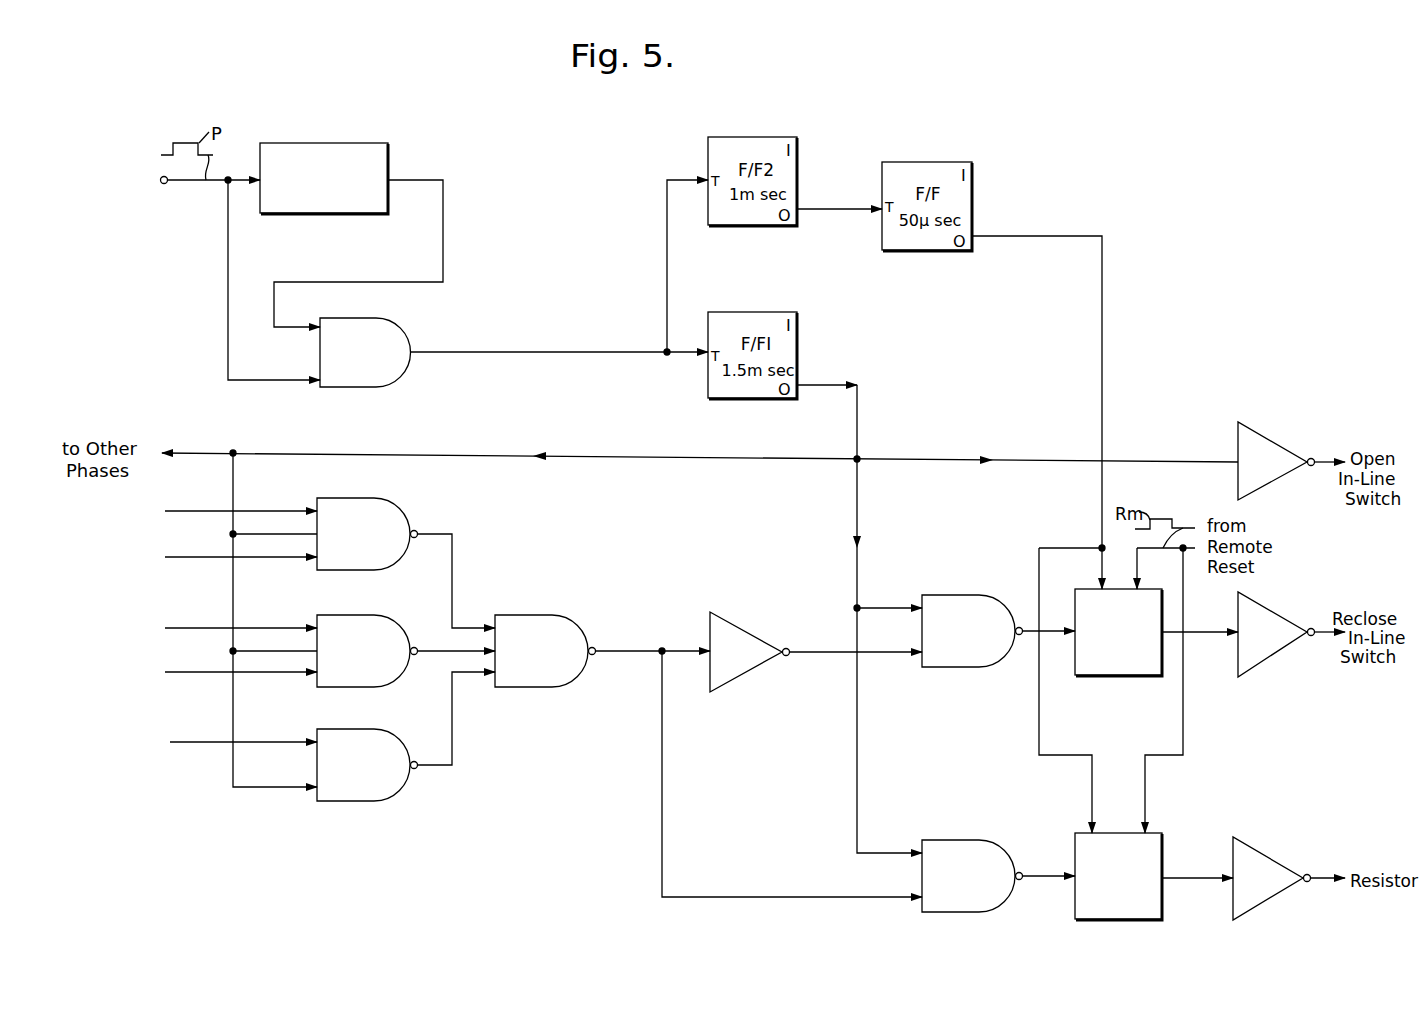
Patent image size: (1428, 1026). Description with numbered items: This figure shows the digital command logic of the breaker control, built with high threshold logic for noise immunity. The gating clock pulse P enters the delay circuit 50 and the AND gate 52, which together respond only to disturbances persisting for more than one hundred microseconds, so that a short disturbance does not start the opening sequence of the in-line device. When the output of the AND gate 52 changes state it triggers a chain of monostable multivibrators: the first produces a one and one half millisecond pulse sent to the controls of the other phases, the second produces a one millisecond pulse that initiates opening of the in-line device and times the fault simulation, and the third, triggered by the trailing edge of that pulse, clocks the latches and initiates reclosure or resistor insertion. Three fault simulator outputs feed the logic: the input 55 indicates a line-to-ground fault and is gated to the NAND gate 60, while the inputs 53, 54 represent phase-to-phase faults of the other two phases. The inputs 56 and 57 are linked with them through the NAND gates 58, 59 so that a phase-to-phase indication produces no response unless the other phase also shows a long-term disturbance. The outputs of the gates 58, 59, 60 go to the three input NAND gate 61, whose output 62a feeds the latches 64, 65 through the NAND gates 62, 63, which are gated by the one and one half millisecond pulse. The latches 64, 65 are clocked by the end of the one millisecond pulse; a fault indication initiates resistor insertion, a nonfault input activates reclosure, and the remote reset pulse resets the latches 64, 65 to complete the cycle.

The delay circuit 50 is at (381, 206).
The AND gate 52 is at (379, 349).
The input 53 is at (188, 557).
The input 54 is at (199, 672).
The input 55 is at (198, 742).
The input 56 is at (214, 491).
The input 57 is at (197, 627).
The NAND gate 58 is at (387, 518).
The NAND gate 59 is at (390, 632).
The NAND gate 60 is at (386, 742).
The three input NAND gate 61 is at (568, 633).
The NAND gate 62 is at (977, 607).
The output 62a is at (632, 651).
The NAND gate 63 is at (996, 860).
The latch 64 is at (1148, 675).
The latch 65 is at (1158, 912).